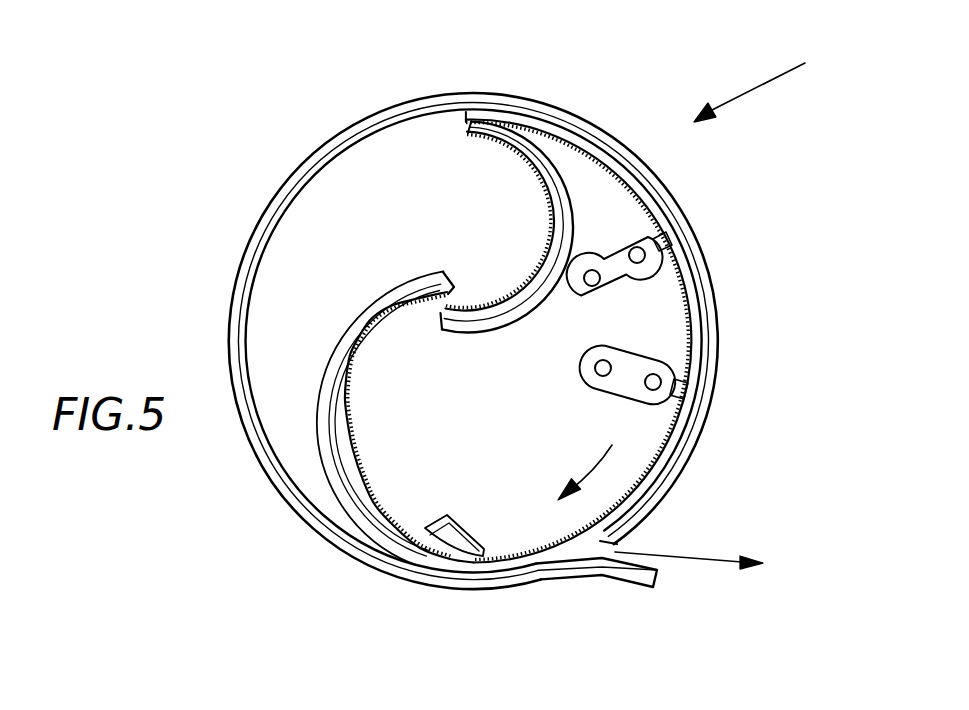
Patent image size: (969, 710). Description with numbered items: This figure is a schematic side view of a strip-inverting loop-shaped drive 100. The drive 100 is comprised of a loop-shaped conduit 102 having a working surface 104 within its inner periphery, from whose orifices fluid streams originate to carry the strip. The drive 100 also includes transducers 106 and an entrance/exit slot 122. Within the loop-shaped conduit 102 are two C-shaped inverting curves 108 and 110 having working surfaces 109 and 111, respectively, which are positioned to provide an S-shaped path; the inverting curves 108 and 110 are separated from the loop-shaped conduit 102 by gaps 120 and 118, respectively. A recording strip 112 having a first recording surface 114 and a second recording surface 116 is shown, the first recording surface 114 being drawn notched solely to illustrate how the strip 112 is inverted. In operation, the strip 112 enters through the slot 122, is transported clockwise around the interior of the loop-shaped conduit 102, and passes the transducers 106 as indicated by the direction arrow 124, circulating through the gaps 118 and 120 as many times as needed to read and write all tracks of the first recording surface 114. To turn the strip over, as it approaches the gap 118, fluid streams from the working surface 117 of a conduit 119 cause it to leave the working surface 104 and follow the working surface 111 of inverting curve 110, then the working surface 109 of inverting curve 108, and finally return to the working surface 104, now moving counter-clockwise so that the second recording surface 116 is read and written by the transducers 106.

The strip-inverting loop-shaped drive 100 is at (772, 81).
The loop-shaped conduit 102 is at (698, 243).
The working surface 104 is at (247, 338).
The transducers 106 is at (637, 353).
The C-shaped inverting curve 108 is at (503, 318).
The working surface 109 is at (524, 280).
The C-shaped inverting curve 110 is at (376, 313).
The working surface 111 is at (338, 436).
The recording strip 112 is at (382, 337).
The first recording surface 114 is at (620, 173).
The second recording surface 116 is at (538, 166).
The working surface 117 is at (455, 555).
The gap 118 is at (425, 563).
The conduit 119 is at (458, 528).
The gap 120 is at (467, 123).
The entrance/exit slot 122 is at (618, 546).
The direction arrow 124 is at (600, 468).